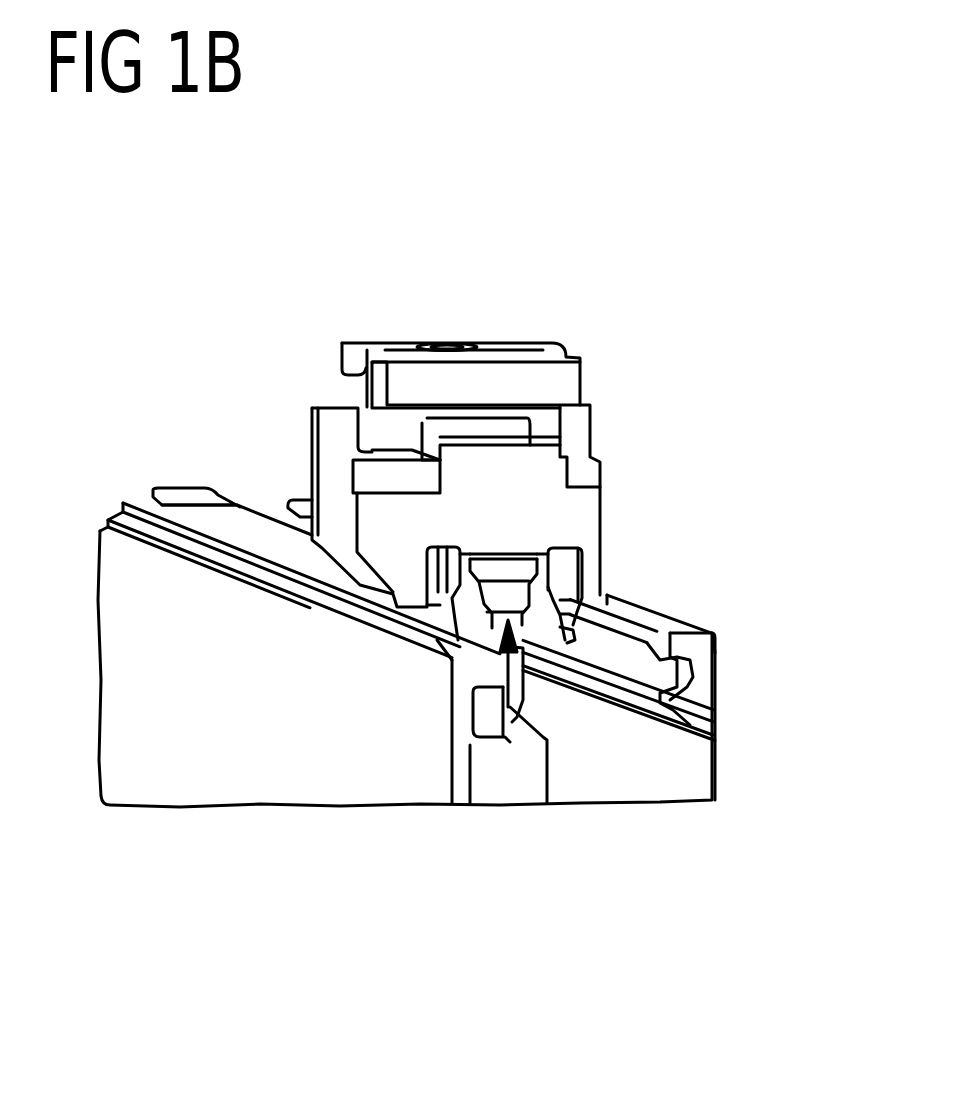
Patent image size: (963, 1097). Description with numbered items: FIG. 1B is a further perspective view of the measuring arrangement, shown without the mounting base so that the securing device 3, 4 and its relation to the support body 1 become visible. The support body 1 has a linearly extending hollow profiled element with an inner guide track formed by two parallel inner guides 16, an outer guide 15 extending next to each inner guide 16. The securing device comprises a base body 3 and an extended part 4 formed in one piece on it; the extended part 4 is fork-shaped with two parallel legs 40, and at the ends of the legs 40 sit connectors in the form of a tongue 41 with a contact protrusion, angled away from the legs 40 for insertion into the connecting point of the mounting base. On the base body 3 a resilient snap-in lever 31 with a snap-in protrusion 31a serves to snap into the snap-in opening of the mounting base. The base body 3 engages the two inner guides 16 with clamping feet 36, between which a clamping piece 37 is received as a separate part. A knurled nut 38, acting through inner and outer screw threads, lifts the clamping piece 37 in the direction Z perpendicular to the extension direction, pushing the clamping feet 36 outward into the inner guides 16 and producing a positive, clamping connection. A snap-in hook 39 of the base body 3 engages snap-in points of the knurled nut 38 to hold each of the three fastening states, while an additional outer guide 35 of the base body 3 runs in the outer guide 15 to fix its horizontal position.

The support body 1 is at (731, 754).
The base body 3 is at (610, 362).
The extended part 4 is at (260, 492).
The outer guide 15 is at (695, 650).
The inner guide 16 is at (640, 657).
The snap-in lever 31 is at (356, 340).
The snap-in protrusion 31a is at (343, 373).
The outer guide 35 is at (440, 605).
The clamping feet 36 is at (447, 612).
The clamping piece 37 is at (510, 592).
The knurled nut 38 is at (385, 477).
The snap-in element 39 is at (438, 437).
The legs 40 is at (273, 547).
The tongue 41 is at (195, 493).
The direction z Z is at (547, 803).